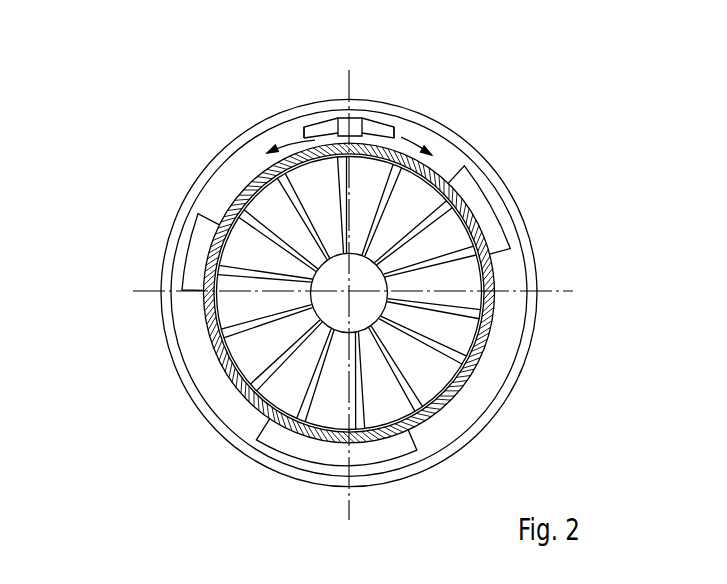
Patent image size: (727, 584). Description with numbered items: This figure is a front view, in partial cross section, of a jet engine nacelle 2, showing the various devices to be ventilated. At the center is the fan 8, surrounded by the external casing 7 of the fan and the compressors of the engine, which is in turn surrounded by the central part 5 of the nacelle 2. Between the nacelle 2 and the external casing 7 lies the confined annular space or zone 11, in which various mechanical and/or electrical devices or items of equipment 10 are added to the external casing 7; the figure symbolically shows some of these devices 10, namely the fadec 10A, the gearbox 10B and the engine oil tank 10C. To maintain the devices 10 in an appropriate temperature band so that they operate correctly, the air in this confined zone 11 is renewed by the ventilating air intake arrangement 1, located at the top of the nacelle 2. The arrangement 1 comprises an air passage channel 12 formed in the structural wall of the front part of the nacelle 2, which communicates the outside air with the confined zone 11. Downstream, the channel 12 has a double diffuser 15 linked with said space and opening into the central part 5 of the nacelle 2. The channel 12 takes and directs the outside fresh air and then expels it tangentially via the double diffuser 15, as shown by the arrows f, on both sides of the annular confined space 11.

The ventilating air intake arrangement 1 is at (339, 108).
The nacelle 2 is at (210, 152).
The central part 5 is at (467, 147).
The external casing 7 is at (475, 350).
The fan 8 is at (247, 348).
The devices or items of equipment 10 is at (349, 323).
The fadec 10A is at (487, 218).
The gearbox 10B is at (367, 452).
The engine oil tank 10C is at (200, 253).
The confined annular space 11 is at (515, 285).
The air passage channel 12 is at (357, 118).
The diffuser 15 is at (306, 127).
The arrows f is at (300, 141).